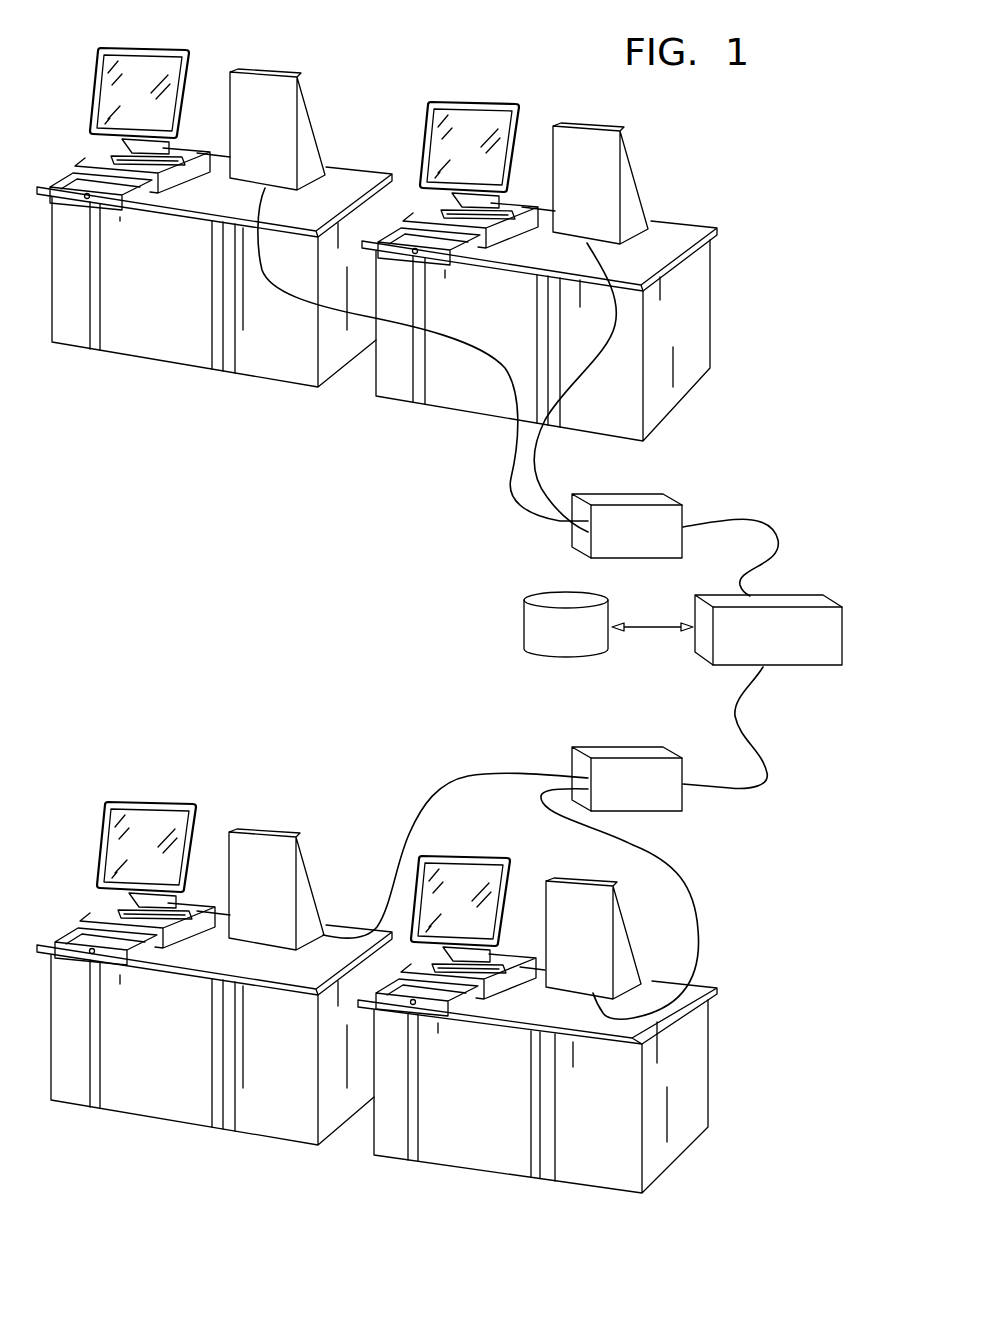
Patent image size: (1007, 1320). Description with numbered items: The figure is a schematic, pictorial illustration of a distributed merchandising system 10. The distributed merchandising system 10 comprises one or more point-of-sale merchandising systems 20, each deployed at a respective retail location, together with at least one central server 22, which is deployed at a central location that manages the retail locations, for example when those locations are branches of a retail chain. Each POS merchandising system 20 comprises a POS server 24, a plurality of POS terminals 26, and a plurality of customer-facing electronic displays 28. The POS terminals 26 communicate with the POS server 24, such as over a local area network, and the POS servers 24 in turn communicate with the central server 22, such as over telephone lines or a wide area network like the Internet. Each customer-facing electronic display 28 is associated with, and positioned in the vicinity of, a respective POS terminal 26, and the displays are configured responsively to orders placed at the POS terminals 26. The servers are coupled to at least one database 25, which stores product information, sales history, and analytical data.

The distributed merchandising system 10 is at (444, 613).
The point-of-sale merchandising system 20 is at (485, 454).
The central server 22 is at (797, 595).
The POS server 24 is at (643, 499).
The database 25 is at (524, 623).
The POS terminal 26 is at (68, 103).
The customer-facing electronic display 28 is at (304, 98).